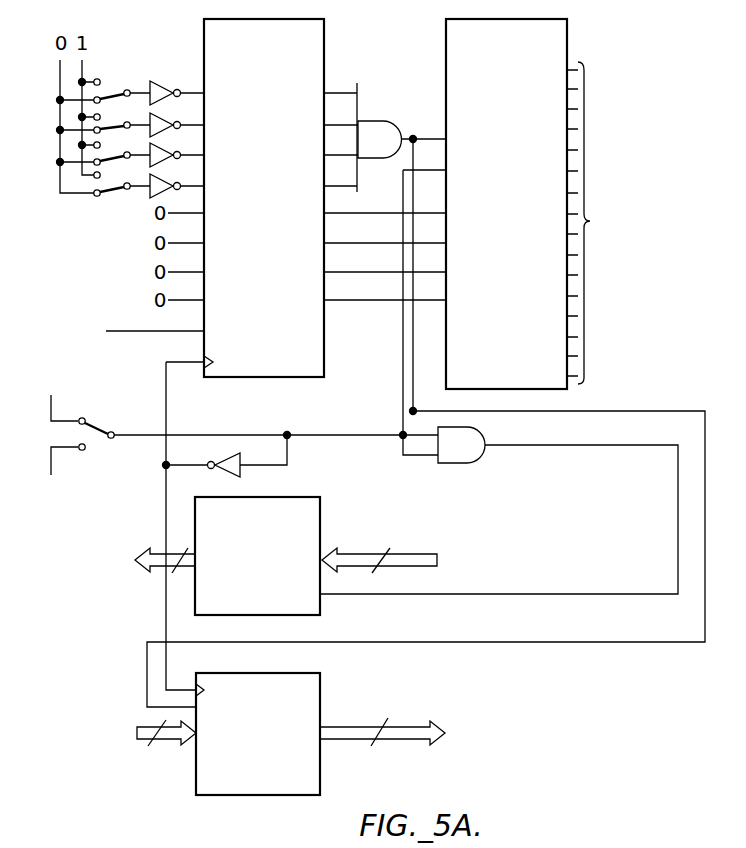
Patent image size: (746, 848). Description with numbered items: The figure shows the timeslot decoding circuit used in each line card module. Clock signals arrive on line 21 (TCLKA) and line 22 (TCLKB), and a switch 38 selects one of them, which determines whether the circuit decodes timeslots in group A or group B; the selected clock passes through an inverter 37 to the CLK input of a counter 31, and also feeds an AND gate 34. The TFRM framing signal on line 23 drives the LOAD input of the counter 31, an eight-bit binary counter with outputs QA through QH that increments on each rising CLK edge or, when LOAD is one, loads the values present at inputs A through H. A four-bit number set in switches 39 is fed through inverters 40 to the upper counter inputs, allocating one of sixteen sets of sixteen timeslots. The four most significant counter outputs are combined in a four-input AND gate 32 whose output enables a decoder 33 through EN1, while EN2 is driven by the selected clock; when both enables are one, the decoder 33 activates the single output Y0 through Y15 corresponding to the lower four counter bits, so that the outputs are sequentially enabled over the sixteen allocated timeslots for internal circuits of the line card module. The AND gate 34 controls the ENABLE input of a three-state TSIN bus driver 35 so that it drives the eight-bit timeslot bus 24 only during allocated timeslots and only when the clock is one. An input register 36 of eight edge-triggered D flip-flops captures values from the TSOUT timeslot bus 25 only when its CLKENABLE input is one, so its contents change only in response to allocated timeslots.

The line 21 is at (51, 412).
The line 22 is at (51, 466).
The line 23 is at (114, 331).
The timeslot bus 24 is at (159, 548).
The timeslot bus 25 is at (143, 742).
The counter 31 is at (326, 44).
The AND gate 32 is at (383, 122).
The decoder 33 is at (571, 38).
The AND gate 34 is at (471, 464).
The TSIN bus driver 35 is at (321, 510).
The input register 36 is at (322, 680).
The inverter 37 is at (244, 476).
The switch 38 is at (104, 427).
The switches 39 is at (115, 199).
The inverters 40 is at (149, 208).